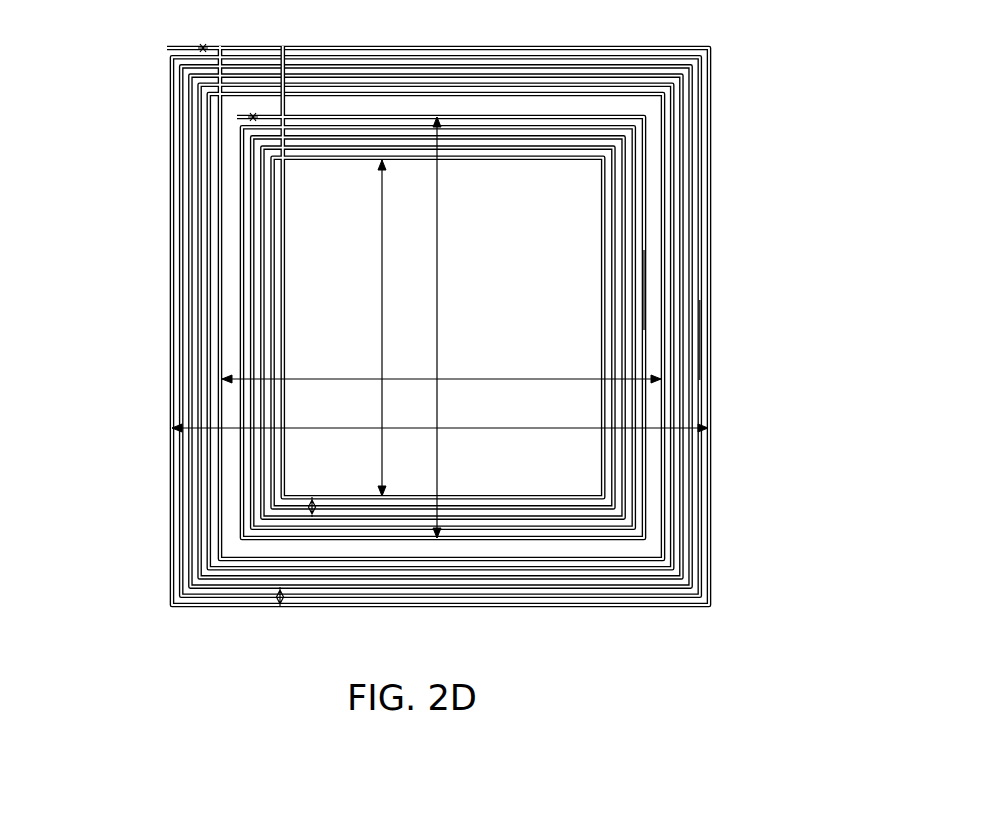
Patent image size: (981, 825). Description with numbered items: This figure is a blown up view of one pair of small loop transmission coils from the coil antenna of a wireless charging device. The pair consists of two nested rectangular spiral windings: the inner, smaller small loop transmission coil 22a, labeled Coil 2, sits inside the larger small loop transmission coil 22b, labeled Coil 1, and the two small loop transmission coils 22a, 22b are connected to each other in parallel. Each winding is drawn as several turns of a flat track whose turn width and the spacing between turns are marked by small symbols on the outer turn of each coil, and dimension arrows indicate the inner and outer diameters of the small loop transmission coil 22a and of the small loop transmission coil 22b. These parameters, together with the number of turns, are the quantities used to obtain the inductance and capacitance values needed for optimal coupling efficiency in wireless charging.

The first (outer) coil Coil 1 is at (693, 114).
The second (inner) coil Coil 2 is at (614, 215).
The small loop transmission coil 22a is at (637, 288).
The small loop transmission coil 22b is at (695, 335).